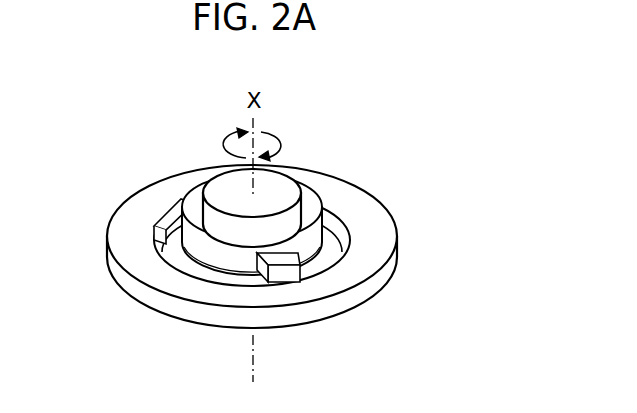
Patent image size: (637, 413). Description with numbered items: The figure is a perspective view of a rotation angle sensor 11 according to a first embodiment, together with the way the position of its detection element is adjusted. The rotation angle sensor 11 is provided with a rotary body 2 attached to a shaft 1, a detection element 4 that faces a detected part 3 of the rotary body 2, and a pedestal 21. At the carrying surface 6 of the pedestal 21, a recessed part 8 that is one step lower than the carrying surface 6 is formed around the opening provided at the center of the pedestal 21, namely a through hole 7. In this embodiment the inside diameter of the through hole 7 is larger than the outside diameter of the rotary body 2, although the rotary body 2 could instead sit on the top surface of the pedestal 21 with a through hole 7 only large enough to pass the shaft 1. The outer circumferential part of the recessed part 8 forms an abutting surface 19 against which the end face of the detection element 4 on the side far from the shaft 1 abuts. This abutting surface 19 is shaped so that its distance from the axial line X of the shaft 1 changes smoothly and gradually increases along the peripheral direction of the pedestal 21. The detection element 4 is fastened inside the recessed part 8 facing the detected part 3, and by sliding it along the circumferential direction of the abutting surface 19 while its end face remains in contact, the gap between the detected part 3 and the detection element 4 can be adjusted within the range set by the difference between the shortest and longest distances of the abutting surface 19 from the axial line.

The shaft 1 is at (285, 190).
The rotary body 2 is at (148, 223).
The detected part 3 is at (227, 257).
The detection element 4 is at (293, 270).
The carrying surface 6 is at (140, 260).
The through hole 7 is at (349, 227).
The recessed part 8 is at (333, 253).
The rotation angle sensor 11 is at (282, 208).
The abutting surface 19 is at (176, 247).
The pedestal 21 is at (223, 253).